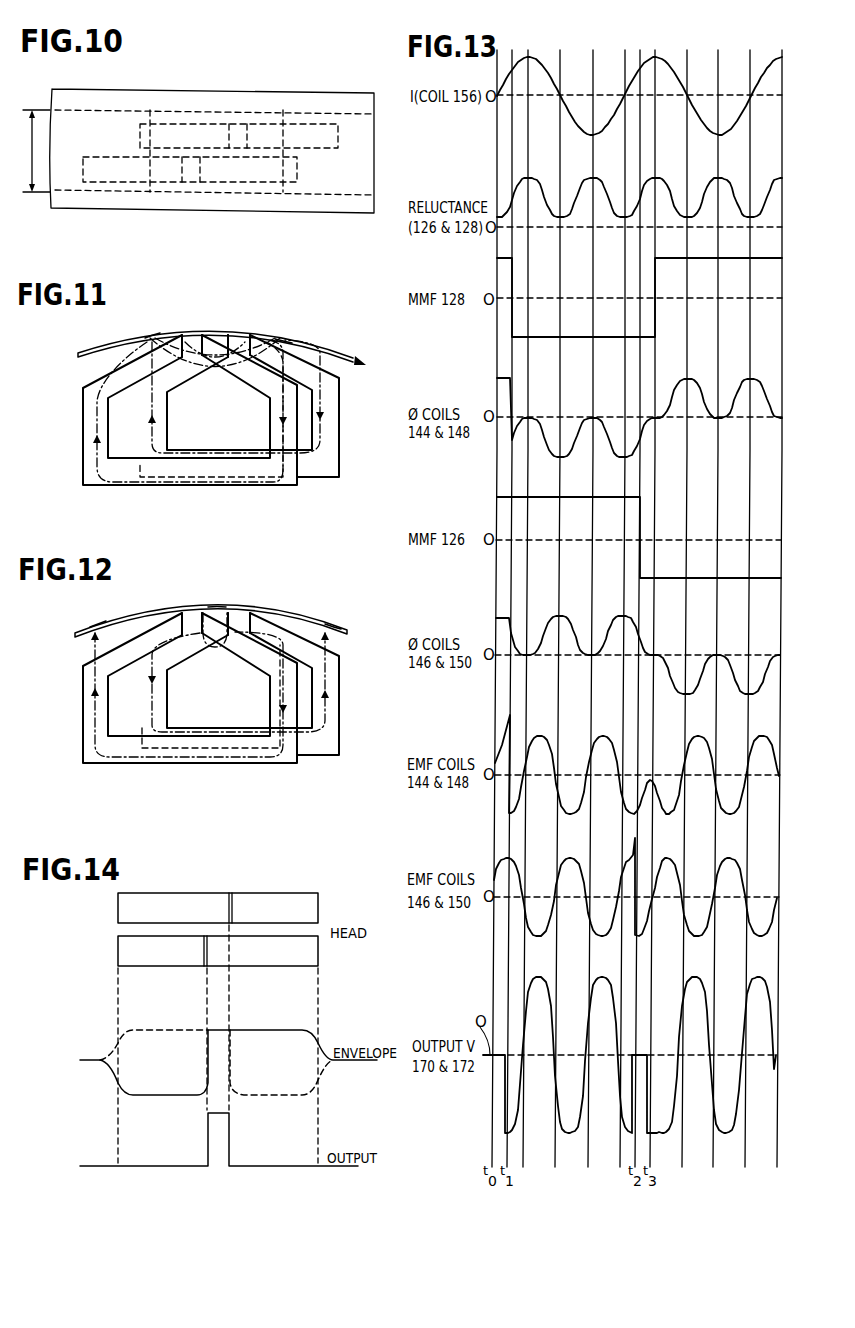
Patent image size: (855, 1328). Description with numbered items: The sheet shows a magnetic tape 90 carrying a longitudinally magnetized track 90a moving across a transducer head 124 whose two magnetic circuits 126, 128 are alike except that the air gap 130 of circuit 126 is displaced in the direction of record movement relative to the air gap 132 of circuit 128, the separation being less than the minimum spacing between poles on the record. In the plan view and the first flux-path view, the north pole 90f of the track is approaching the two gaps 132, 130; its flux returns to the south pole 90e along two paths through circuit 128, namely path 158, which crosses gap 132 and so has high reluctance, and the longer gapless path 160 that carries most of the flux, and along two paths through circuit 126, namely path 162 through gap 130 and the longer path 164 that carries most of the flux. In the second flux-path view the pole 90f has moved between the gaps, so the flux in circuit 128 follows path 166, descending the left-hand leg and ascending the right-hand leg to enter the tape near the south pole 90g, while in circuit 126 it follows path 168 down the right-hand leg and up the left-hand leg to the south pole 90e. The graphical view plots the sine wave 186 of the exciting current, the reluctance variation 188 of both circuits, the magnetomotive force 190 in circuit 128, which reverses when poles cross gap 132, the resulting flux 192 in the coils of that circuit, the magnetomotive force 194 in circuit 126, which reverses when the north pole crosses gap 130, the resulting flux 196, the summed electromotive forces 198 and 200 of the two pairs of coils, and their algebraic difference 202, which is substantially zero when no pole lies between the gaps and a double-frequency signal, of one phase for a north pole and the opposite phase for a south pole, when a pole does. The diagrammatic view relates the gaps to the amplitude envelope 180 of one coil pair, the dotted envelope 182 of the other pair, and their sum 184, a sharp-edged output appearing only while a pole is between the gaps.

In FIG. 10, the magnetic tape 90 is at (92, 91).
In FIG. 11, the magnetic tape 90 is at (343, 353).
In FIG. 12, the magnetic tape 90 is at (297, 612).
In FIG. 10, the track 90a is at (34, 151).
In FIG. 10, the south pole 90e is at (150, 137).
In FIG. 11, the south pole 90e is at (152, 337).
In FIG. 12, the south pole 90e is at (97, 623).
In FIG. 10, the north pole 90f is at (285, 135).
In FIG. 11, the north pole 90f is at (287, 340).
In FIG. 12, the north pole 90f is at (217, 607).
In FIG. 12, the south pole 90g is at (333, 625).
In FIG. 10, the head 124 is at (165, 213).
In FIG. 11, the head 124 is at (193, 388).
In FIG. 12, the head 124 is at (198, 668).
In FIG. 11, the magnetic circuit 126 is at (82, 467).
In FIG. 12, the magnetic circuit 126 is at (87, 747).
In FIG. 14, the magnetic circuit 126 is at (317, 954).
In FIG. 11, the magnetic circuit 128 is at (333, 447).
In FIG. 12, the magnetic circuit 128 is at (330, 727).
In FIG. 14, the magnetic circuit 128 is at (312, 912).
In FIG. 10, the air gap 130 is at (190, 178).
In FIG. 11, the air gap 130 is at (190, 333).
In FIG. 12, the air gap 130 is at (190, 612).
In FIG. 14, the air gap 130 is at (202, 954).
In FIG. 10, the air gap 132 is at (238, 127).
In FIG. 11, the air gap 132 is at (238, 337).
In FIG. 12, the air gap 132 is at (242, 612).
In FIG. 14, the air gap 132 is at (233, 912).
In FIG. 11, the flux path 158 is at (267, 342).
In FIG. 11, the flux path 160 is at (337, 407).
In FIG. 11, the flux path 162 is at (230, 367).
In FIG. 11, the flux path 164 is at (97, 403).
In FIG. 12, the flux path 166 is at (152, 708).
In FIG. 12, the flux path 168 is at (95, 708).
In FIG. 14, the amplitude envelope 180 is at (167, 1097).
In FIG. 14, the amplitude envelope 182 is at (155, 1028).
In FIG. 14, the resultant curve 184 is at (157, 1167).
In FIG. 13, the exciting current curve 186 is at (537, 58).
In FIG. 13, the reluctance curve 188 is at (515, 185).
In FIG. 13, the magnetomotive force curve 190 is at (513, 272).
In FIG. 13, the flux curve 192 is at (510, 383).
In FIG. 13, the magnetomotive force curve 194 is at (497, 493).
In FIG. 13, the flux curve 196 is at (510, 630).
In FIG. 13, the electromotive force curve 198 is at (540, 733).
In FIG. 13, the electromotive force curve 200 is at (526, 903).
In FIG. 13, the output signal curve 202 is at (538, 975).